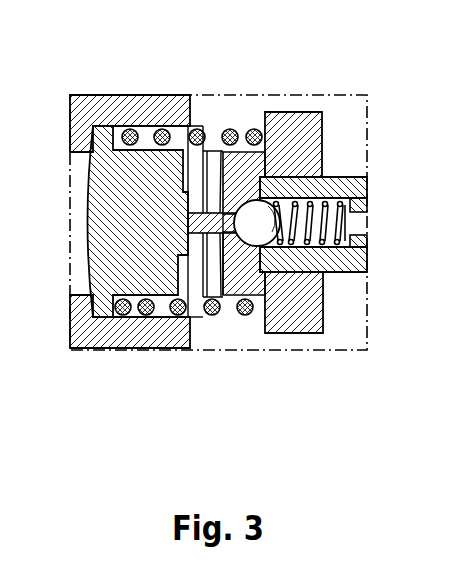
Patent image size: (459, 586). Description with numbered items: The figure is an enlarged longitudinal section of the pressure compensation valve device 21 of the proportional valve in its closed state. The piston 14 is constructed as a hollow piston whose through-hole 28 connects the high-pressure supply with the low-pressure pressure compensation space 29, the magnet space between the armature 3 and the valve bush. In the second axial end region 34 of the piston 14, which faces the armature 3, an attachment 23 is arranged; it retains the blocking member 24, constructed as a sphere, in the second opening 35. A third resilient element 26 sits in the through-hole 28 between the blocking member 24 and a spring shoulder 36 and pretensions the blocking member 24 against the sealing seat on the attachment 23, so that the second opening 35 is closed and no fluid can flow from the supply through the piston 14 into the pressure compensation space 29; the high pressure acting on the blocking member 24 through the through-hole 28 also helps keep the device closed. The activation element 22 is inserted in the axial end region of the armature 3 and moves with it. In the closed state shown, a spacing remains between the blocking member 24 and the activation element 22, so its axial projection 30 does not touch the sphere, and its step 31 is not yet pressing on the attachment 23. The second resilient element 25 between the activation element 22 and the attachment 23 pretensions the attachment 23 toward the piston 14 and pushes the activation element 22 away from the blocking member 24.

The armature 3 is at (88, 118).
The piston 14 is at (328, 190).
The pressure compensation valve device 21 is at (266, 378).
The activation element 22 is at (122, 240).
The attachment 23 is at (287, 303).
The blocking member 24 is at (260, 221).
The second resilient element 25 is at (200, 196).
The third resilient element 26 is at (327, 247).
The through-hole 28 is at (355, 226).
The pressure compensation space 29 is at (353, 122).
The axial projection 30 is at (217, 195).
The step 31 is at (191, 205).
The second axial end region 34 is at (207, 318).
The second opening 35 is at (246, 268).
The spring shoulder 36 is at (355, 198).